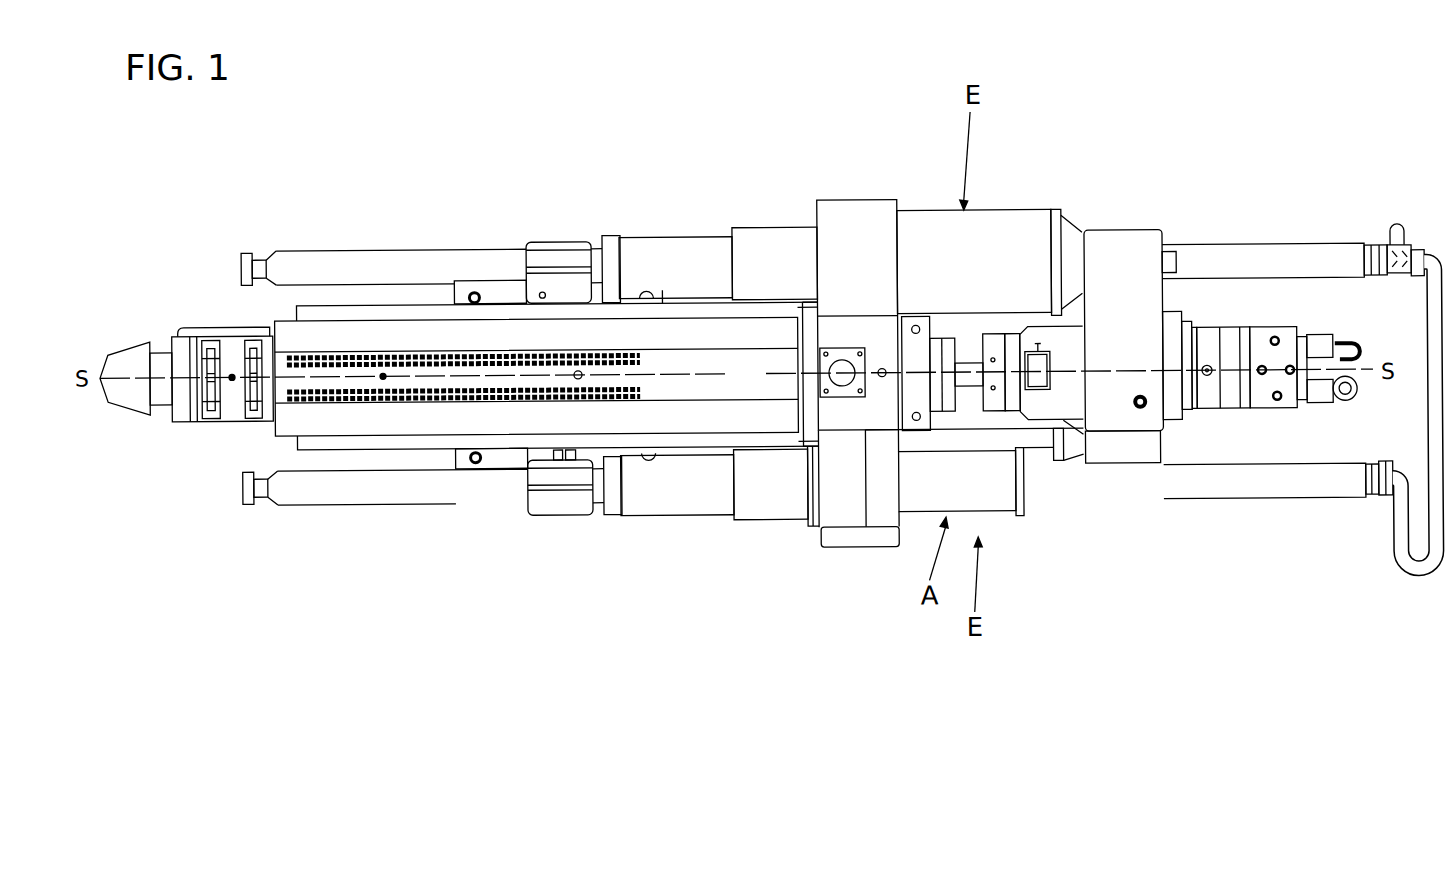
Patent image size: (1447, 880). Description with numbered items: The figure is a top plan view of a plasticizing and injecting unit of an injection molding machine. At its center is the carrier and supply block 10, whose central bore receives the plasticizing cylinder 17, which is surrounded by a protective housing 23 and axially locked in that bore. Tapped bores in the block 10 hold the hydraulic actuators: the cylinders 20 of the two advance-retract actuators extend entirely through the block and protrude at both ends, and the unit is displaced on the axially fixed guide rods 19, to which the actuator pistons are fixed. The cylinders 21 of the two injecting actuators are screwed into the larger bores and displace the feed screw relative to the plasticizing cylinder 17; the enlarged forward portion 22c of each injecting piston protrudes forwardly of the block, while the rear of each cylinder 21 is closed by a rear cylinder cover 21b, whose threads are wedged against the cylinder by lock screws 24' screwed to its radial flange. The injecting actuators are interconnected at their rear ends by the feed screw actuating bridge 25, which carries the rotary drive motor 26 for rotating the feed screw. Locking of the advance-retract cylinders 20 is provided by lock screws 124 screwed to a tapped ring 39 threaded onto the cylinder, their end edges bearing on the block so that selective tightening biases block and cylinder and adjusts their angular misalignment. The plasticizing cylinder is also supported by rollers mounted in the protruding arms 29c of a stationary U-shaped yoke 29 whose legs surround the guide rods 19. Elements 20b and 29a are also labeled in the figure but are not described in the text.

The carrier and supply block 10 is at (852, 192).
The plasticizing cylinder 17 is at (175, 329).
The guide rods 19 is at (300, 252).
The cylinders of the advance-retract actuators 20 is at (683, 255).
The cylinder flange 20b is at (608, 249).
The cylinders of the injecting actuators 21 is at (997, 242).
The rear cylinder cover 21b is at (1070, 243).
The forward portion of the injecting piston 22c is at (775, 250).
The protective housing 23 is at (357, 337).
The lock screws 24' is at (1068, 370).
The feed screw actuating bridge 25 is at (1118, 270).
The rotary drive motor 26 is at (1232, 406).
The U-shaped yoke 29 is at (551, 230).
The clamping jaw 29a is at (572, 249).
The protruding arms 29c is at (497, 288).
The tapped ring 39 is at (815, 504).
The lock screws 124 is at (807, 521).